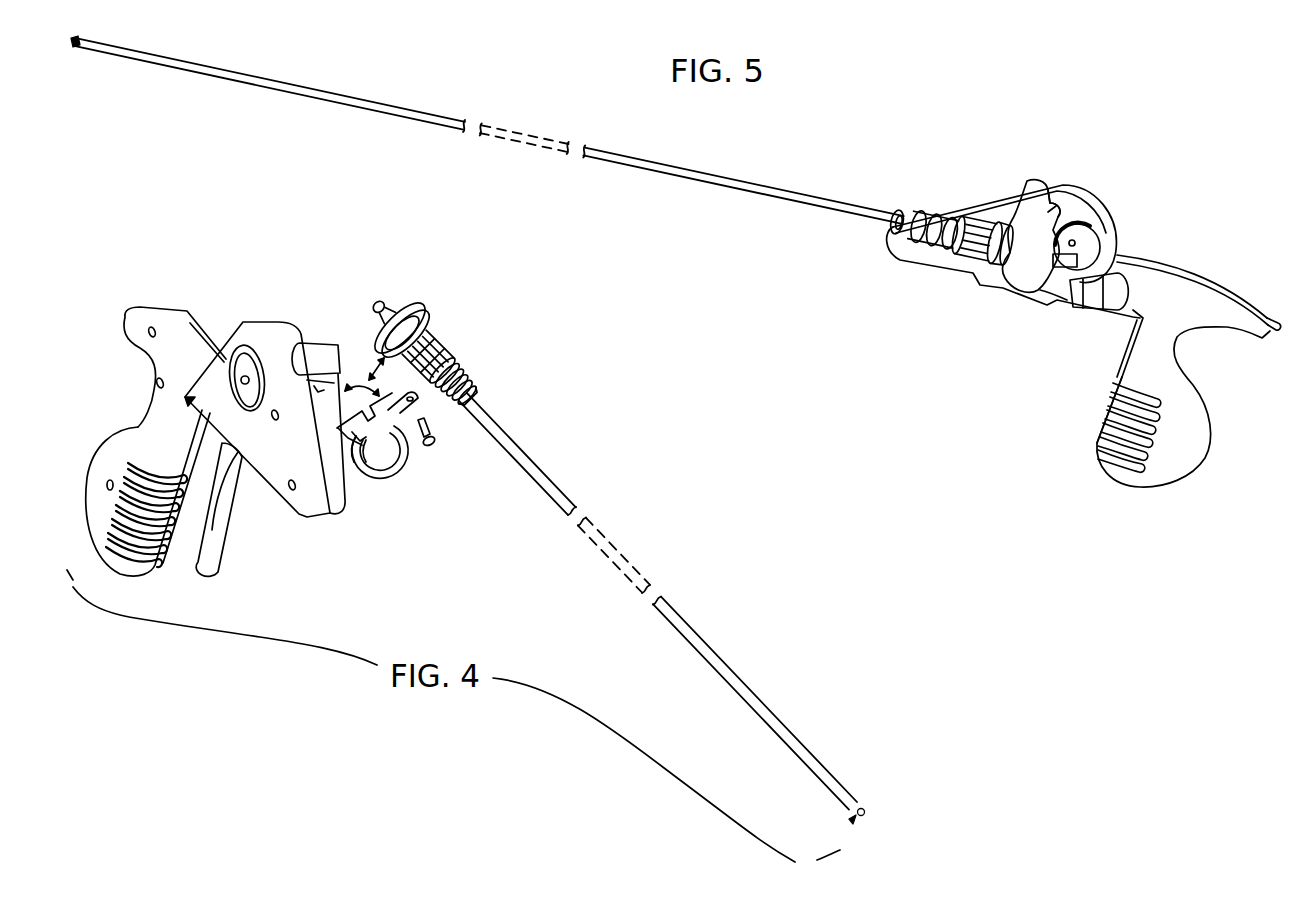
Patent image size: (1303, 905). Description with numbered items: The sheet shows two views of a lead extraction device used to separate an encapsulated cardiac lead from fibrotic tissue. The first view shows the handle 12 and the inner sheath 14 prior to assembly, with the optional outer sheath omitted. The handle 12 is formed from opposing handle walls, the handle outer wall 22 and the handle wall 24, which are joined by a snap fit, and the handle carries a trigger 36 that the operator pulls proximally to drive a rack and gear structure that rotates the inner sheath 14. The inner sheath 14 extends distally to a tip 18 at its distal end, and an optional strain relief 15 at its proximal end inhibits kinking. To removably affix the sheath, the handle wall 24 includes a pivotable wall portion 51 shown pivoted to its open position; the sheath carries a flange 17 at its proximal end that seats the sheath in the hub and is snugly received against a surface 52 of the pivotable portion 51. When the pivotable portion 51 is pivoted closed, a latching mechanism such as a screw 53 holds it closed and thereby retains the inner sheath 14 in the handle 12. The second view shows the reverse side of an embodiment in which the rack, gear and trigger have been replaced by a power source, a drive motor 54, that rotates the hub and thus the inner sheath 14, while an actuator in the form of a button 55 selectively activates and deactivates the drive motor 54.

In FIG. 5, the handle 12 is at (1088, 333).
In FIG. 4, the handle 12 is at (444, 559).
In FIG. 5, the inner sheath 14 is at (758, 183).
In FIG. 4, the inner sheath 14 is at (727, 662).
In FIG. 5, the strain relief 15 is at (953, 210).
In FIG. 4, the strain relief 15 is at (463, 368).
In FIG. 4, the flange 17 is at (427, 305).
In FIG. 5, the tip 18 is at (73, 46).
In FIG. 4, the tip 18 is at (855, 818).
In FIG. 5, the handle outer wall 22 is at (1183, 398).
In FIG. 4, the handle outer wall 22 is at (118, 463).
In FIG. 5, the handle wall 24 is at (1153, 343).
In FIG. 4, the handle wall 24 is at (203, 322).
In FIG. 4, the trigger 36 is at (223, 526).
In FIG. 4, the pivotable wall portion 51 is at (403, 476).
In FIG. 4, the surface 52 is at (365, 460).
In FIG. 5, the screw 53 is at (1064, 215).
In FIG. 4, the screw 53 is at (432, 442).
In FIG. 5, the drive motor 54 is at (1120, 278).
In FIG. 5, the button 55 is at (1274, 321).